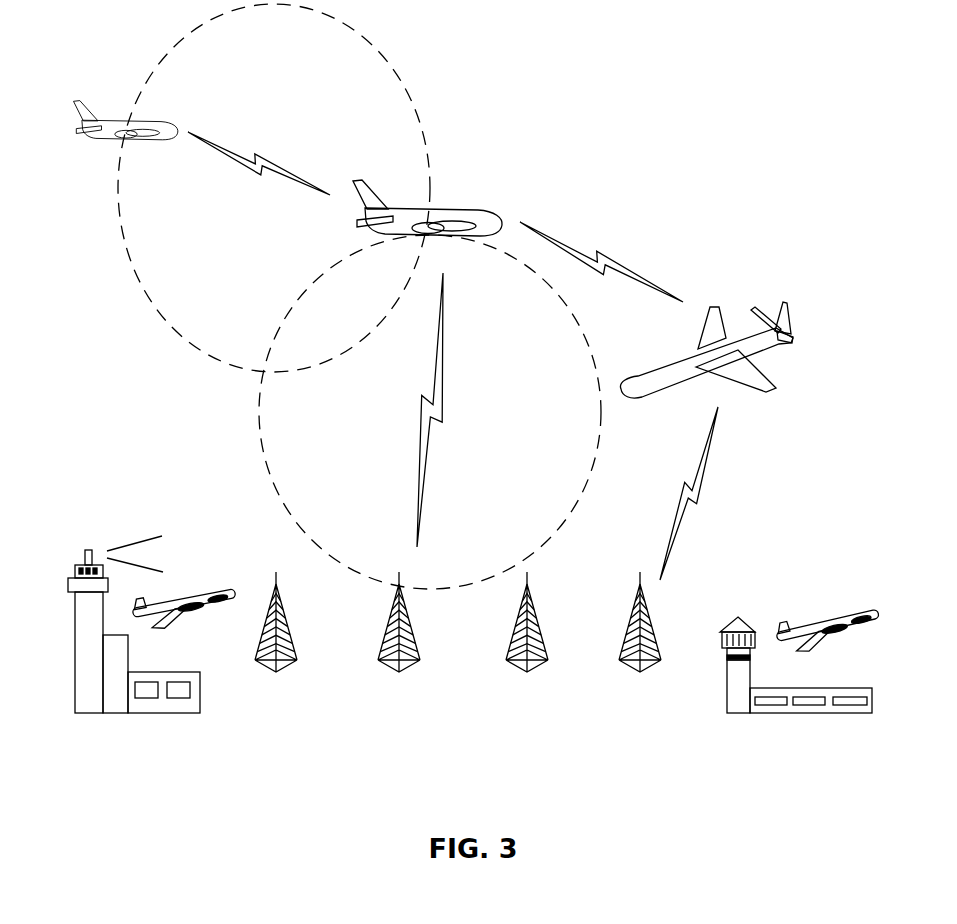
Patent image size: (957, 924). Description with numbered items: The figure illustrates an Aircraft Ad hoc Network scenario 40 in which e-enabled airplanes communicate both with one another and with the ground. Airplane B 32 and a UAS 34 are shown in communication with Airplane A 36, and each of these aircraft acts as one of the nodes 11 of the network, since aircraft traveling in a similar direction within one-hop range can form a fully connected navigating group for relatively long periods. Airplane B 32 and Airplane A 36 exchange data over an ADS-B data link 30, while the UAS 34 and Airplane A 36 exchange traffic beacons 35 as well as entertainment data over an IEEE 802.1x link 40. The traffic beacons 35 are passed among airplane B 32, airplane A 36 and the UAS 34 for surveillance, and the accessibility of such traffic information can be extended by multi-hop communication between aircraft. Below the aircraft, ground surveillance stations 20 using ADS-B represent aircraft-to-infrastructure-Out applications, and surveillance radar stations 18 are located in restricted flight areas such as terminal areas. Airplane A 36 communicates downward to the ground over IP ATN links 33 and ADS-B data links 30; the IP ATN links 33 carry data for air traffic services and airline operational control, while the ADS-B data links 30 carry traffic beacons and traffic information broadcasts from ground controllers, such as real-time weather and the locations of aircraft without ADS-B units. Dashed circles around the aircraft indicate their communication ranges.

The nodes 11 is at (108, 142).
The surveillance radar stations 18 is at (131, 529).
The ground surveillance station 20 is at (287, 665).
The ADS-B data links 30 is at (292, 177).
The Airplane B 32 is at (83, 102).
The IP ATN links 33 is at (425, 463).
The UAS 34 is at (762, 385).
The traffic beacons 35 is at (605, 261).
The Airplane A 36 is at (488, 212).
The AANET scenario 40 is at (602, 262).